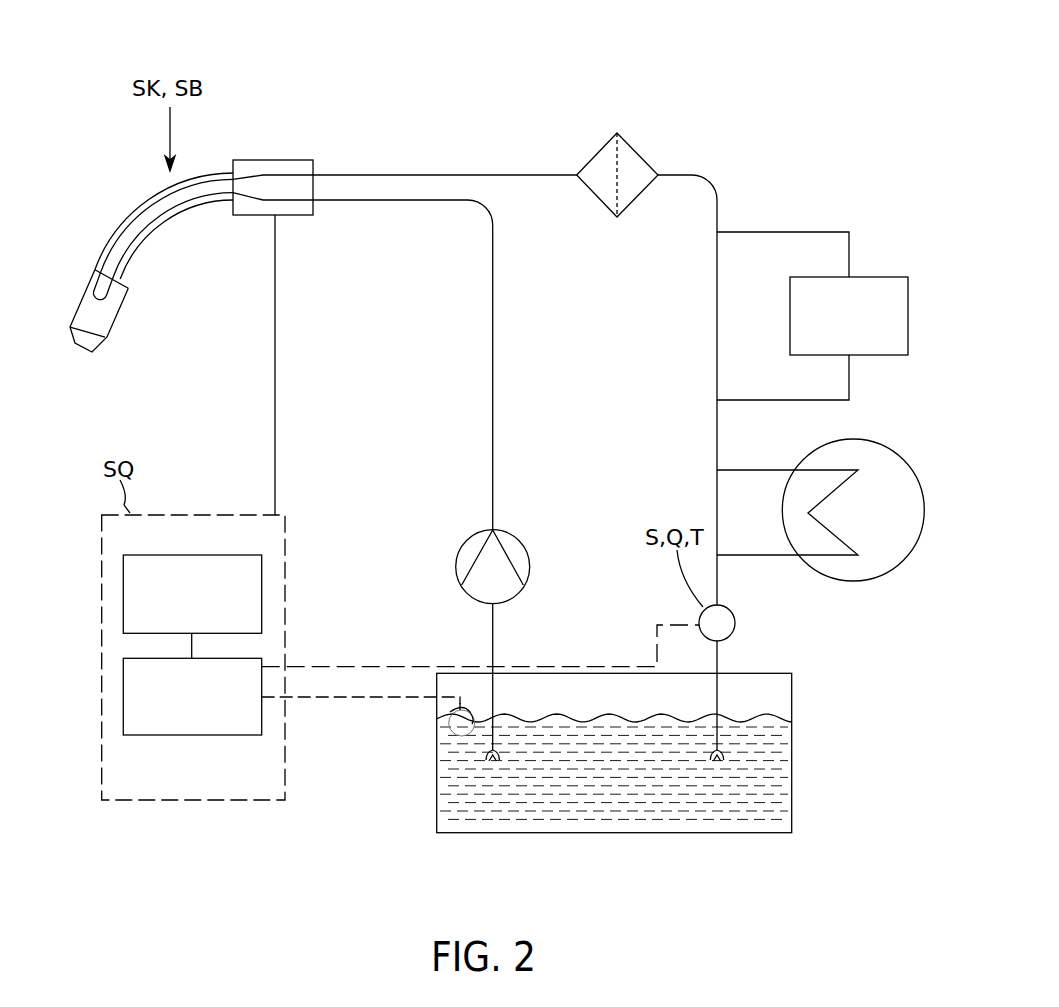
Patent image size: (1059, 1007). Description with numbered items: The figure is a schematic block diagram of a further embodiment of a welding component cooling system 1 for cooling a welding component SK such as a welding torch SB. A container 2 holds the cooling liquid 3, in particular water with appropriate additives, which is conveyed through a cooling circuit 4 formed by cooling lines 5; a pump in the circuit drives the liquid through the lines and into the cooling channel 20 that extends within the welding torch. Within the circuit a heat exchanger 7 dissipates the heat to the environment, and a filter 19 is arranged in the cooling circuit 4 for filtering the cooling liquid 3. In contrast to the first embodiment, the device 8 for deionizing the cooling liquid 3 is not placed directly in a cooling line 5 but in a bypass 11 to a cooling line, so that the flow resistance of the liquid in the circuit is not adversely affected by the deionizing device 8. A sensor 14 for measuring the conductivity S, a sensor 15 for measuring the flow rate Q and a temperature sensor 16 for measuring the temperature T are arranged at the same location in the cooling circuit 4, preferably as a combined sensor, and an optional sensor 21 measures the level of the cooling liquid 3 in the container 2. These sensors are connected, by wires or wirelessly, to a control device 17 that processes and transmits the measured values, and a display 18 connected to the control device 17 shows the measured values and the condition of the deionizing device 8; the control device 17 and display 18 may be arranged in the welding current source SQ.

The welding component cooling system 1 is at (800, 55).
The container 2 is at (792, 752).
The cooling liquid 3 is at (623, 824).
The cooling circuit 4 is at (445, 357).
The cooling line 5 is at (433, 200).
The heat exchanger 7 is at (925, 515).
The device for deionizing the cooling liquid 8 is at (908, 315).
The bypass 11 is at (816, 232).
The sensor for measuring the conductivity 14 is at (786, 682).
The sensor for measuring the flow rate 15 is at (786, 682).
The temperature sensor 16 is at (736, 623).
The control device 17 is at (123, 688).
The display 18 is at (123, 583).
The filter 19 is at (580, 162).
The cooling channel 20 is at (172, 224).
The sensor for measuring the level 21 is at (452, 707).